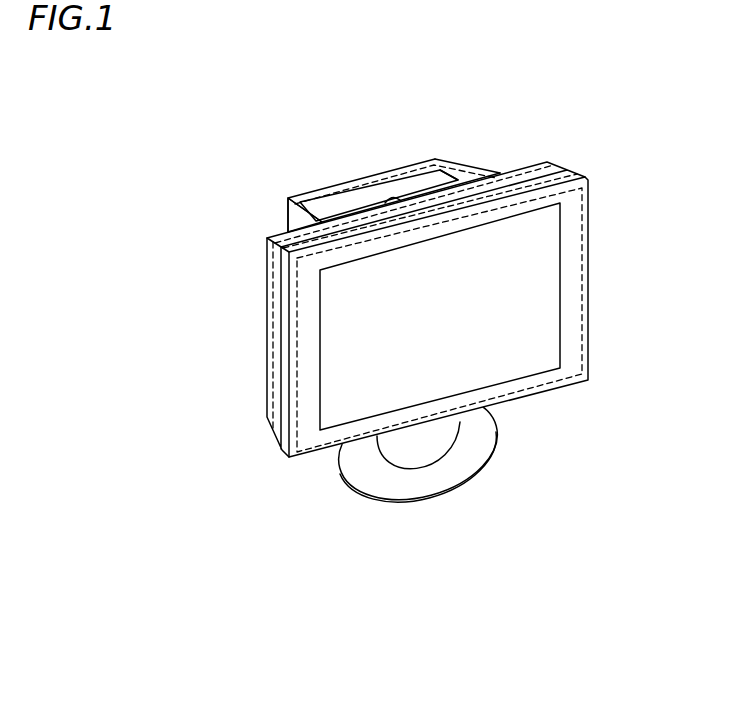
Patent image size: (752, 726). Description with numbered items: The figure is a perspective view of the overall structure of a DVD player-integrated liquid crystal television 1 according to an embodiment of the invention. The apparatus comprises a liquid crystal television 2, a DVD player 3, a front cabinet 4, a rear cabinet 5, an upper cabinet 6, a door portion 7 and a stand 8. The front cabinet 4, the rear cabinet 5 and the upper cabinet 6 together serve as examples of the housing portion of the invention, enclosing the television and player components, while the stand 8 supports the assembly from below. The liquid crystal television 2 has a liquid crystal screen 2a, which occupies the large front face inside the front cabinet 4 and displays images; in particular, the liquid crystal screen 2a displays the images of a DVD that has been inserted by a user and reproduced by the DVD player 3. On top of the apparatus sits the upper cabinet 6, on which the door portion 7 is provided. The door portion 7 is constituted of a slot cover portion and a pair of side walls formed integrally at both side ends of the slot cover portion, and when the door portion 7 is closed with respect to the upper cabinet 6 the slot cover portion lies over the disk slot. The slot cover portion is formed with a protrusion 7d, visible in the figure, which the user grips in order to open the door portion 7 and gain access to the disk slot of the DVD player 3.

The DVD player-integrated liquid crystal television 1 is at (634, 116).
The liquid crystal television 2 is at (588, 237).
The liquid crystal screen 2a is at (550, 332).
The DVD player 3 is at (311, 192).
The front cabinet 4 is at (573, 283).
The rear cabinet 5 is at (295, 218).
The upper cabinet 6 is at (462, 172).
The door portion 7 is at (346, 203).
The protrusion 7d is at (395, 195).
The stand 8 is at (495, 423).